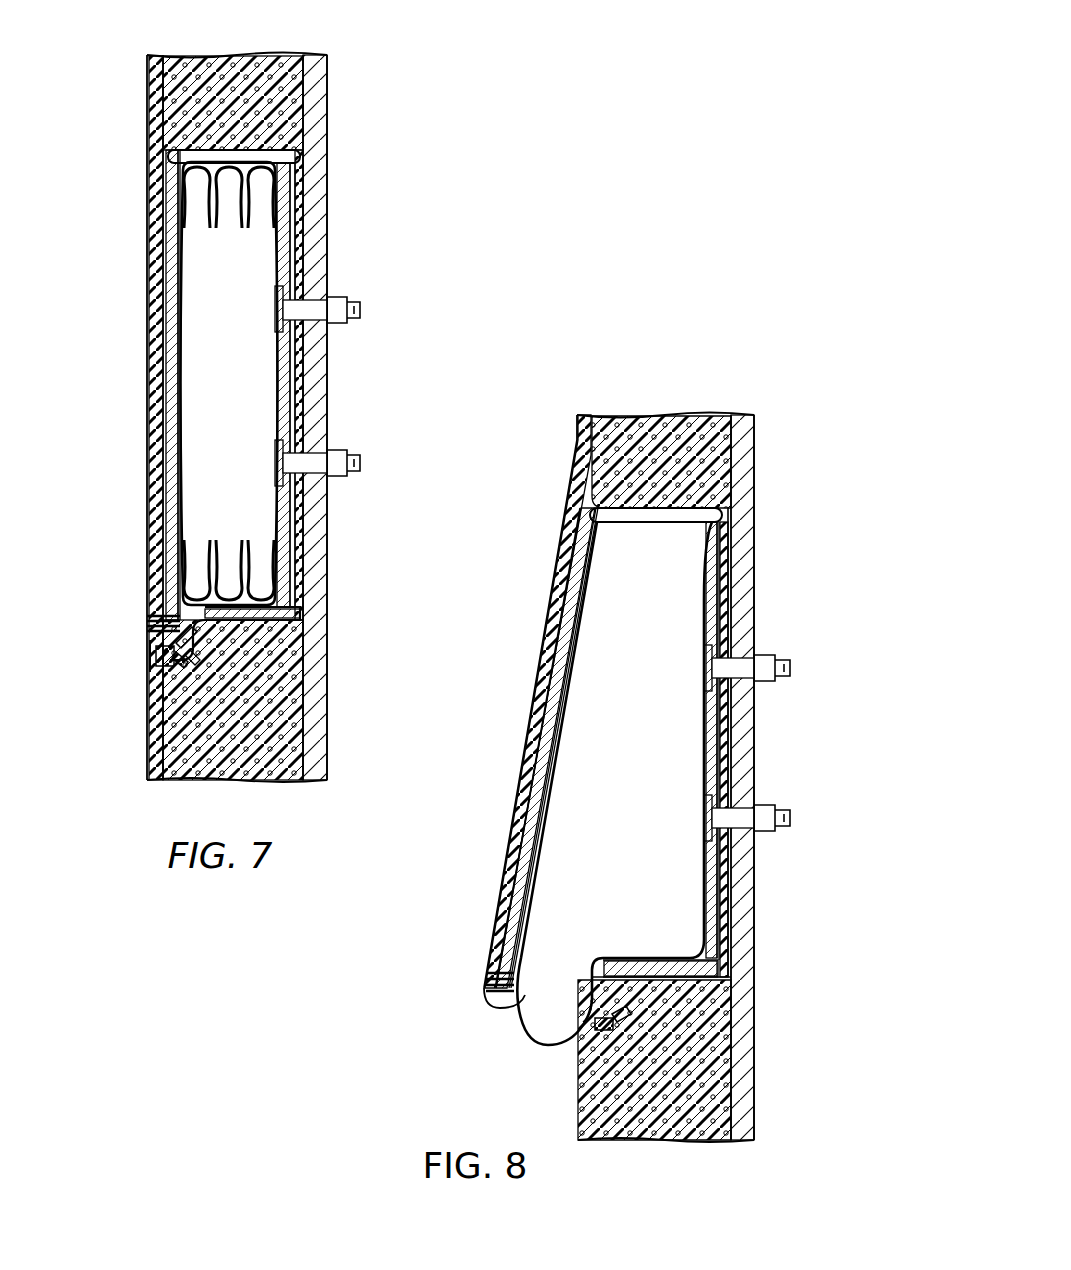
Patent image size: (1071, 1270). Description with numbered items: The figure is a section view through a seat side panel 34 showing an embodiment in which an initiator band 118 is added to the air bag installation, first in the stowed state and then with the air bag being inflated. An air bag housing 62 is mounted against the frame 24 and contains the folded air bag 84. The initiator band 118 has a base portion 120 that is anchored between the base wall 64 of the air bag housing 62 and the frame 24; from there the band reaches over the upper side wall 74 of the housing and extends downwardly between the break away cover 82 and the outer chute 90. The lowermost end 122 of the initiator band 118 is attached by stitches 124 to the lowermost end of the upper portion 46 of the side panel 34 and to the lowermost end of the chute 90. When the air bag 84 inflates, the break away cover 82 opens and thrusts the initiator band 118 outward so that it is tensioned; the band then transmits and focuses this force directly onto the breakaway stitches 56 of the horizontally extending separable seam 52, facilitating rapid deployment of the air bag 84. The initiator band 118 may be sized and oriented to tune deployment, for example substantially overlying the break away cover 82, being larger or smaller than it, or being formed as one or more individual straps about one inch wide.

In FIG. 7, the frame 24 is at (316, 177).
In FIG. 8, the frame 24 is at (745, 456).
In FIG. 7, the side panel 34 is at (150, 238).
In FIG. 8, the side panel 34 is at (540, 621).
In FIG. 7, the upper portion of the side panel 46 is at (150, 346).
In FIG. 8, the upper portion of the side panel 46 is at (512, 792).
In FIG. 7, the horizontal extending separable seam 52 is at (150, 662).
In FIG. 7, the breakaway stitches 56 is at (152, 657).
In FIG. 7, the air bag housing 62 is at (325, 356).
In FIG. 8, the air bag housing 62 is at (720, 716).
In FIG. 7, the base wall of air bag housing 64 is at (305, 407).
In FIG. 8, the base wall of air bag housing 64 is at (720, 736).
In FIG. 7, the upper side wall of the air bag housing 74 is at (232, 160).
In FIG. 8, the upper side wall of the air bag housing 74 is at (655, 515).
In FIG. 7, the break away cover 82 is at (175, 453).
In FIG. 8, the break away cover 82 is at (500, 852).
In FIG. 7, the air bag 84 is at (243, 503).
In FIG. 8, the air bag 84 is at (585, 790).
In FIG. 7, the outer chute 90 is at (160, 316).
In FIG. 8, the outer chute 90 is at (540, 692).
In FIG. 7, the initiator band 118 is at (148, 427).
In FIG. 8, the initiator band 118 is at (506, 822).
In FIG. 7, the base portion of the initiator band 120 is at (305, 228).
In FIG. 8, the base portion of the initiator band 120 is at (730, 562).
In FIG. 7, the lowermost end of the initiator band 122 is at (165, 573).
In FIG. 8, the lowermost end of the initiator band 122 is at (495, 902).
In FIG. 7, the stitches 124 is at (148, 622).
In FIG. 8, the stitches 124 is at (488, 986).